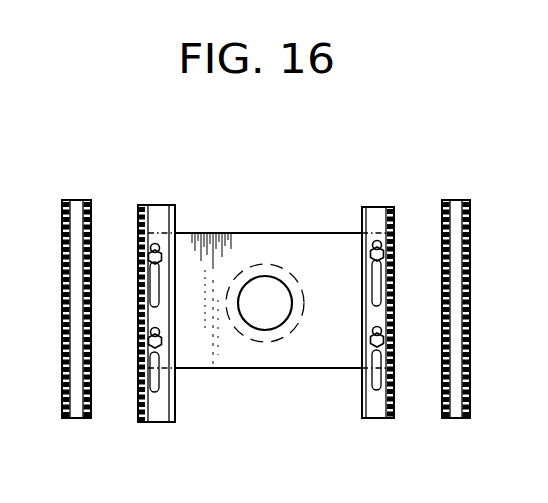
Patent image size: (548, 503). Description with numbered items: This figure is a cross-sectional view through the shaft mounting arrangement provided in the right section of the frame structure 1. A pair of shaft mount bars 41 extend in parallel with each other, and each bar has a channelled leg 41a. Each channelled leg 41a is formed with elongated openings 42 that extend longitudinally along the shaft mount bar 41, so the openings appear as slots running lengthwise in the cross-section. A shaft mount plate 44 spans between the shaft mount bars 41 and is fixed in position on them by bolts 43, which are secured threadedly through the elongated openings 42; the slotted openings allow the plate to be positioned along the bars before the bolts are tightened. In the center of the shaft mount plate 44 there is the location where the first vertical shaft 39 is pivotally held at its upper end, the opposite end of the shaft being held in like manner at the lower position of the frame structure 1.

The frame structure 1 is at (62, 298).
The first vertical shaft 39 is at (266, 276).
The shaft mount bar 41 is at (138, 217).
The channelled leg 41a is at (175, 397).
The elongated opening 42 is at (150, 388).
The bolt 43 is at (152, 343).
The shaft mount plate 44 is at (269, 368).